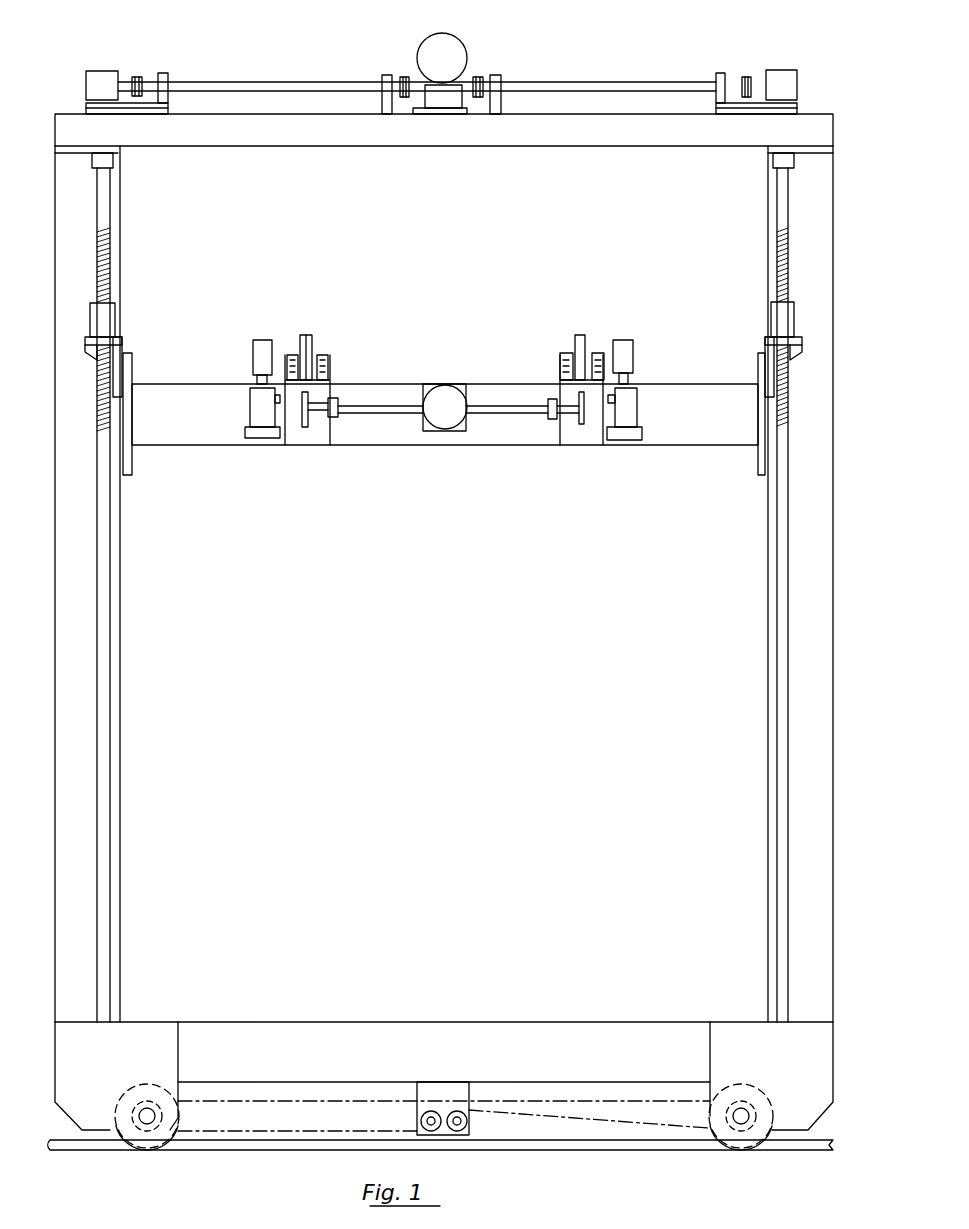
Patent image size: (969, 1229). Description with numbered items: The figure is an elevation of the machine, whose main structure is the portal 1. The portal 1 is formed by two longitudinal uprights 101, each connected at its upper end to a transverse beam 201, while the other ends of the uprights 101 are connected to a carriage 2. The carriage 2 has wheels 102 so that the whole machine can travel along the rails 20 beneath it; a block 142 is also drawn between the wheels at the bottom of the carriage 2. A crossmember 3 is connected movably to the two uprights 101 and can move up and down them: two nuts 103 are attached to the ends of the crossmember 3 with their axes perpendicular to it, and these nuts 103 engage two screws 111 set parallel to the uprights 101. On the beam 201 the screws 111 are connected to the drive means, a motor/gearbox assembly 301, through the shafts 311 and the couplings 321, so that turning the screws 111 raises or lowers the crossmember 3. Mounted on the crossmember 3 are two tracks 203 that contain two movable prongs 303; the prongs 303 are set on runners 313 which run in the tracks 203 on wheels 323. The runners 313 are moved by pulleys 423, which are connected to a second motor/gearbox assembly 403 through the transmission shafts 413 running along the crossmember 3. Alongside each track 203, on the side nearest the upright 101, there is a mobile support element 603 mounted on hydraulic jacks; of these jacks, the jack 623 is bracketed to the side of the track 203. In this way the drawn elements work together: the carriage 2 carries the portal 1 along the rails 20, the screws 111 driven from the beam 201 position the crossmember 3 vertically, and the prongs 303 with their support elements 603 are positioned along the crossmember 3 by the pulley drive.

The portal 1 is at (807, 112).
The carriage 2 is at (423, 1129).
The crossmember 3 is at (525, 443).
The rails 20 is at (600, 1145).
The longitudinal uprights 101 is at (810, 510).
The wheels 102 is at (110, 1132).
The nuts 103 is at (110, 320).
The screws 111 is at (105, 212).
The guide roller block 142 is at (385, 1100).
The transverse beam 201 is at (512, 135).
The tracks 203 is at (330, 368).
The motor/gearbox assembly 301 is at (462, 50).
The movable prongs 303 is at (312, 345).
The shafts 311 is at (285, 80).
The runners 313 is at (303, 360).
The couplings 321 is at (108, 72).
The wheels 323 is at (330, 360).
The motor/gearbox assembly 403 is at (445, 422).
The transmission shafts 413 is at (385, 415).
The pulleys 423 is at (305, 428).
The mobile support element 603 is at (253, 352).
The jack 623 is at (250, 413).